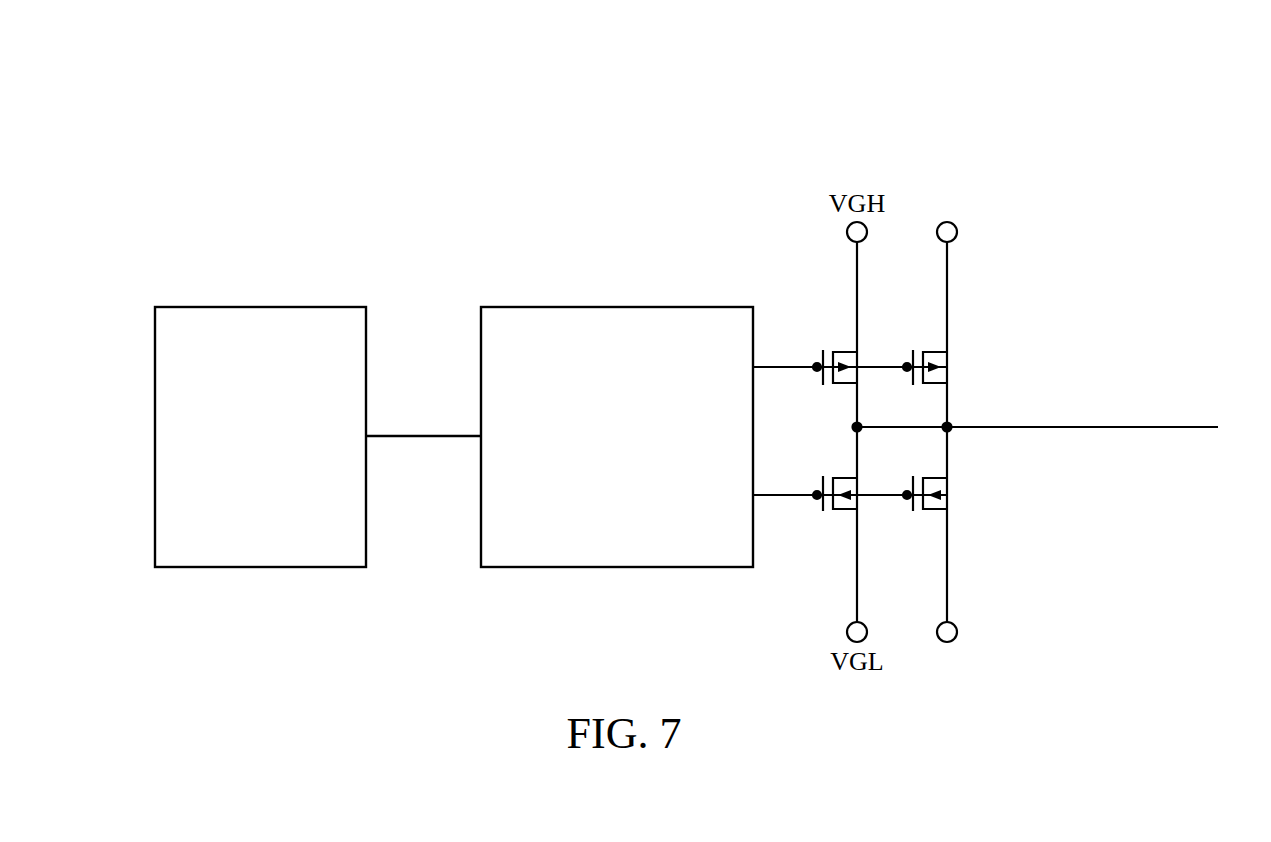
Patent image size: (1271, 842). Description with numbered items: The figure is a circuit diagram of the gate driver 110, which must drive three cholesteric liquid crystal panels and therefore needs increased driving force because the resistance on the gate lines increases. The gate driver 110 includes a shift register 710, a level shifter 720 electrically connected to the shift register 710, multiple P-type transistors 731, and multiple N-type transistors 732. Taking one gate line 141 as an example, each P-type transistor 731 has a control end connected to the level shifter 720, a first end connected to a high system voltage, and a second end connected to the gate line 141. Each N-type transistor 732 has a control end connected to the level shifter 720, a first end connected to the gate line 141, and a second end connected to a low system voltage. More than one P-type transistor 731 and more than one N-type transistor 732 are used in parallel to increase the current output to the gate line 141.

The gate driver 110 is at (86, 100).
The shift register 710 is at (237, 487).
The level shifter 720 is at (594, 487).
The P-type transistor 731 is at (840, 351).
The N-type transistor 732 is at (842, 510).
The gate line 141 is at (1170, 427).